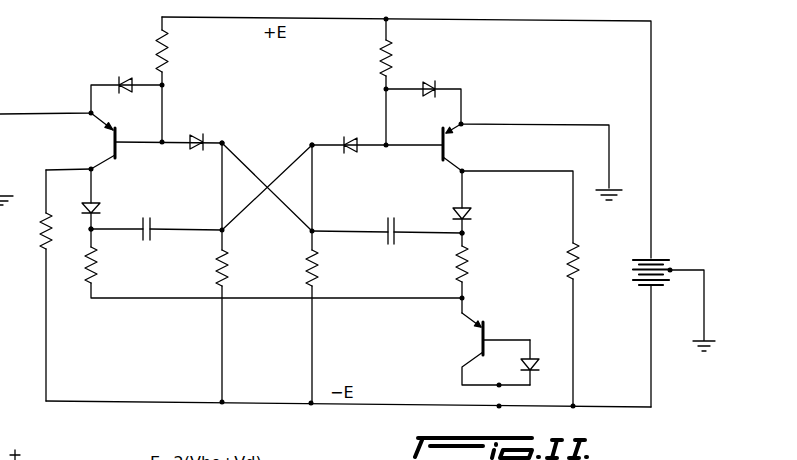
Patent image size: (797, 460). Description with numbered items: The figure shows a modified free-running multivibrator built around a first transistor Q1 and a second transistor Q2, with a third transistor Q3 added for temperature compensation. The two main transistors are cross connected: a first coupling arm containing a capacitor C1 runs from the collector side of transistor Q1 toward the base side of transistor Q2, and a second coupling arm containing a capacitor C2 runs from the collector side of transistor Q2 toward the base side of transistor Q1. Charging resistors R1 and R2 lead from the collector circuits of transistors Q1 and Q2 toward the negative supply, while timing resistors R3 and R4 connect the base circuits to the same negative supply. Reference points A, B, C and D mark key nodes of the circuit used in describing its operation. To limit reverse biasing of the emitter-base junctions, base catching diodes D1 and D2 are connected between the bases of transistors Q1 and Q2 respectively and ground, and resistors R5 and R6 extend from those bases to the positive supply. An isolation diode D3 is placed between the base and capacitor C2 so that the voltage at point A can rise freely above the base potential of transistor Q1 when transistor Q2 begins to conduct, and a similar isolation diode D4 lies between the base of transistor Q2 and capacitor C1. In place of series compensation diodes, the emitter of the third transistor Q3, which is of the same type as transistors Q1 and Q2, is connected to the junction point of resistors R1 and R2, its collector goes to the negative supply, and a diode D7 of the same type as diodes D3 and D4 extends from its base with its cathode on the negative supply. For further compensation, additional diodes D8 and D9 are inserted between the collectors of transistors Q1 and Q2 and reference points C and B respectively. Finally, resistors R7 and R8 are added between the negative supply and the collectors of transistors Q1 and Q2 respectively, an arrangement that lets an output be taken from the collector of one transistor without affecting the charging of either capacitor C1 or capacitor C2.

The charging resistor R1 is at (78, 265).
The charging resistor R2 is at (474, 264).
The timing resistor R3 is at (210, 268).
The timing resistor R4 is at (298, 268).
The resistor R5 is at (176, 51).
The resistor R6 is at (371, 58).
The resistor R7 is at (32, 231).
The resistor R8 is at (585, 261).
The capacitor C1 is at (147, 239).
The capacitor C2 is at (385, 242).
The base catching diode D1 is at (123, 72).
The base catching diode D2 is at (432, 77).
The isolation diode D3 is at (194, 131).
The isolation diode D4 is at (347, 133).
The diode D7 is at (542, 362).
The diode D8 is at (105, 201).
The diode D9 is at (477, 216).
The first transistor Q1 is at (92, 141).
The second transistor Q2 is at (467, 147).
The third transistor Q3 is at (482, 349).
The reference point A is at (231, 139).
The reference point B is at (469, 237).
The reference point C is at (82, 232).
The reference point D is at (303, 140).